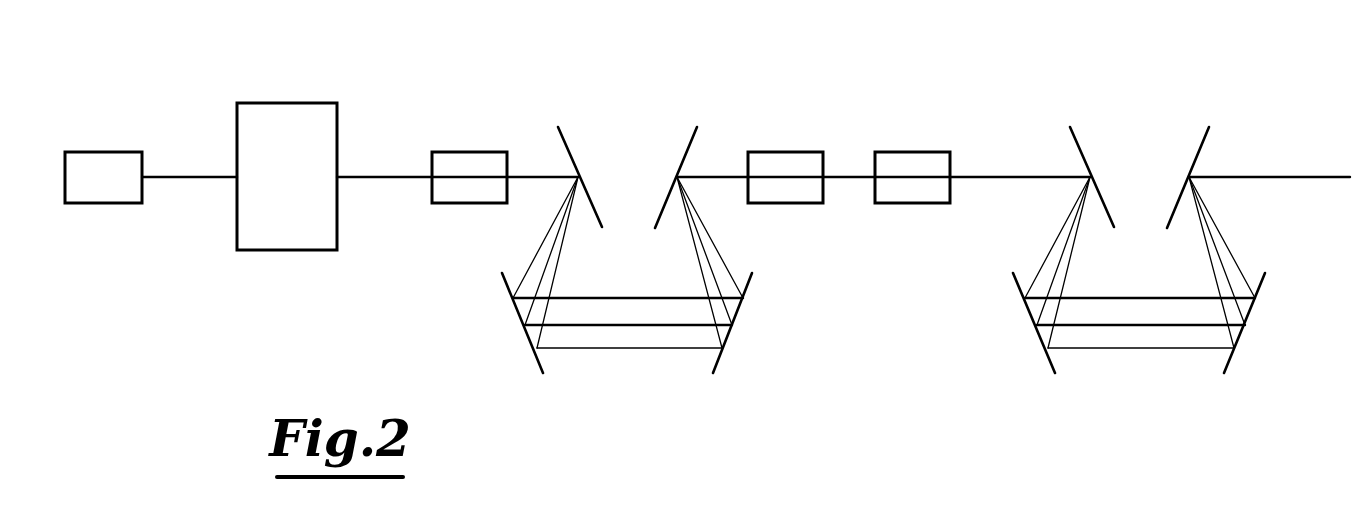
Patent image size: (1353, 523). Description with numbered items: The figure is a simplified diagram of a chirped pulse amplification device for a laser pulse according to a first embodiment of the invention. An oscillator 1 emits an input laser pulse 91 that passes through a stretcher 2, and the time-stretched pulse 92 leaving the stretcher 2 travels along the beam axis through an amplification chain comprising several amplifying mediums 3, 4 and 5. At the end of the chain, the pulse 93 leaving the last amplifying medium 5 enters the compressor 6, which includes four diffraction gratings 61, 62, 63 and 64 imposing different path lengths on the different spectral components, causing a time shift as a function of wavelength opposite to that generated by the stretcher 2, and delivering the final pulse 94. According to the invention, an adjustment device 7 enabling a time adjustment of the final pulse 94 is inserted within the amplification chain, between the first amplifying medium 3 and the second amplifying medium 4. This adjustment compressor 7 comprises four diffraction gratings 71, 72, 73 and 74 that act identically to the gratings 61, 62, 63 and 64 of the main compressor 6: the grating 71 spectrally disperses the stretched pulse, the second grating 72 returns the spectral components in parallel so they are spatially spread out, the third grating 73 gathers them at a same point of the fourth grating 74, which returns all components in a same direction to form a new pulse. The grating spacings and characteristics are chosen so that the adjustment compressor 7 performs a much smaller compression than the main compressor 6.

The oscillator 1 is at (103, 162).
The stretcher 2 is at (288, 133).
The first amplifying medium 3 is at (467, 162).
The second amplifying medium 4 is at (784, 162).
The amplifying medium 5 is at (912, 162).
The compressor 6 is at (1140, 196).
The adjustment device 7 is at (628, 196).
The diffraction grating 61 is at (1071, 127).
The diffraction grating 62 is at (1014, 272).
The diffraction grating 63 is at (1264, 272).
The diffraction grating 64 is at (1207, 127).
The grating 71 is at (560, 127).
The second grating 72 is at (503, 272).
The third grating 73 is at (752, 272).
The fourth grating 74 is at (696, 127).
The input laser pulse 91 is at (188, 172).
The time-stretched pulse 92 is at (378, 172).
The beam path section 93 is at (1012, 172).
The final pulse 94 is at (1284, 172).